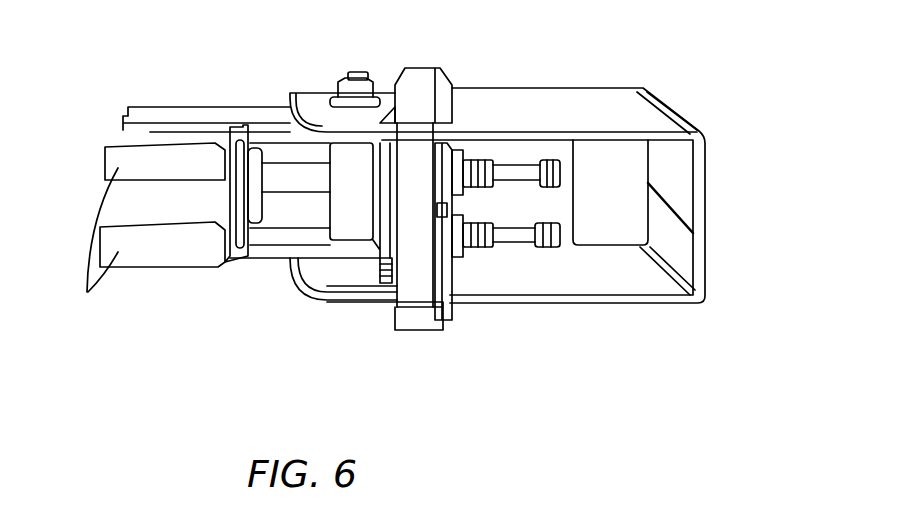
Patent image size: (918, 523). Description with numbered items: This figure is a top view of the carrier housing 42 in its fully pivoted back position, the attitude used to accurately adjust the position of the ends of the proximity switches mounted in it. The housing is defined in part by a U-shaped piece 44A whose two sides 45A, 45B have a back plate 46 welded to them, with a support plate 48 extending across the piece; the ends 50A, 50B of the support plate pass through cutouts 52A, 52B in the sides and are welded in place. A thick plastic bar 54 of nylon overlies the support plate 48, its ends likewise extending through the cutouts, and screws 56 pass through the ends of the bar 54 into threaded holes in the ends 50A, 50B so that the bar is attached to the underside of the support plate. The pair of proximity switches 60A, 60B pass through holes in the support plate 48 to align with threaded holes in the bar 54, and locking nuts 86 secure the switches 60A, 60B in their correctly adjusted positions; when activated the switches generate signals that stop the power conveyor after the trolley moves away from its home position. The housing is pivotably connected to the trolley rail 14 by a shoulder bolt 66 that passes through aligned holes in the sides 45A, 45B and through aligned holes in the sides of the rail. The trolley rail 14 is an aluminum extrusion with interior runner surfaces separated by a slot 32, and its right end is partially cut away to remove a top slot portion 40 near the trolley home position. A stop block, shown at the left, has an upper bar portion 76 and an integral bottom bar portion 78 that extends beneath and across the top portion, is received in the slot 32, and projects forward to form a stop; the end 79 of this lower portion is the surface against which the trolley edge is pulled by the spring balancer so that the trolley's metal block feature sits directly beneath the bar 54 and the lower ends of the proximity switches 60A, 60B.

The trolley rail 14 is at (147, 140).
The top slot portion 40 is at (87, 292).
The slot 32 is at (275, 187).
The end of the spacer stop block lower portion 79 is at (290, 175).
The bottom bar portion 78 is at (315, 173).
The upper bar portion 76 is at (348, 223).
The shoulder bolt 66 is at (348, 73).
The cut outs 52A is at (390, 103).
The cut outs 52B is at (383, 275).
The thick plastic bar 54 is at (415, 70).
The end of support plate 50B is at (447, 83).
The end of support plate 50A is at (438, 330).
The support plate 48 is at (453, 303).
The screws 56 is at (447, 213).
The locking nuts 86 is at (463, 160).
The proximity switch 60A is at (515, 163).
The proximity switch 60B is at (512, 238).
The carrier housing 42 is at (608, 91).
The U-shaped piece 44A is at (663, 102).
The side of U-shaped piece 45A is at (687, 120).
The side of U-shaped piece 45B is at (690, 306).
The back plate 46 is at (578, 193).